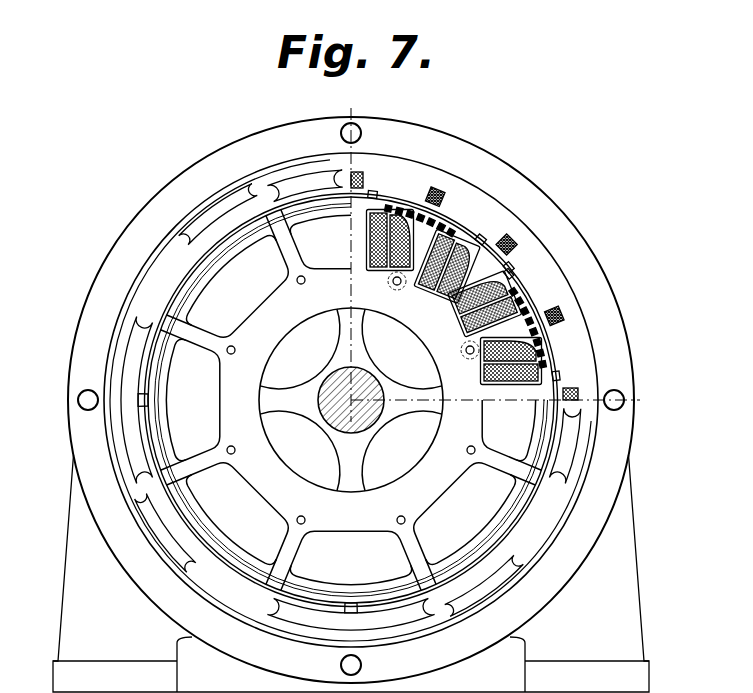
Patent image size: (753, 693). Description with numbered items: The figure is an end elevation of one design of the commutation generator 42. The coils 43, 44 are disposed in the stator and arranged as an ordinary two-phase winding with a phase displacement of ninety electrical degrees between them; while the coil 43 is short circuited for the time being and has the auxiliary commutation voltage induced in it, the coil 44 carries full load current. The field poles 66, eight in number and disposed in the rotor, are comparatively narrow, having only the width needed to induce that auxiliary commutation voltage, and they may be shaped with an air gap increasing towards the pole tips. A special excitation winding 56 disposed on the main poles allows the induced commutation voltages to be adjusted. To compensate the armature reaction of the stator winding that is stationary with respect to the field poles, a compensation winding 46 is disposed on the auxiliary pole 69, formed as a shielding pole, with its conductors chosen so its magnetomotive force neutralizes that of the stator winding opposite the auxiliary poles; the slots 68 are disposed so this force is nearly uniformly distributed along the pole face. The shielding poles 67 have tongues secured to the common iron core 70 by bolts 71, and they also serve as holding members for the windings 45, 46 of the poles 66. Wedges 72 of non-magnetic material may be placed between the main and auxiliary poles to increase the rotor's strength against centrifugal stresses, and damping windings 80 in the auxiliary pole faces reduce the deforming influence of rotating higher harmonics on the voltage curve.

The commutation generator 42 is at (490, 166).
The coil 43 is at (512, 252).
The coil 44 is at (439, 195).
The winding 45 is at (440, 268).
The compensation winding 46 is at (441, 215).
The special excitation winding 56 is at (421, 278).
The field poles 66 is at (492, 267).
The shielding poles 67 is at (393, 280).
The slots 68 is at (394, 211).
The auxiliary pole 69 is at (373, 207).
The common iron core 70 is at (440, 364).
The bolts 71 is at (393, 287).
The wedges 72 is at (505, 278).
The damping windings 80 is at (545, 352).